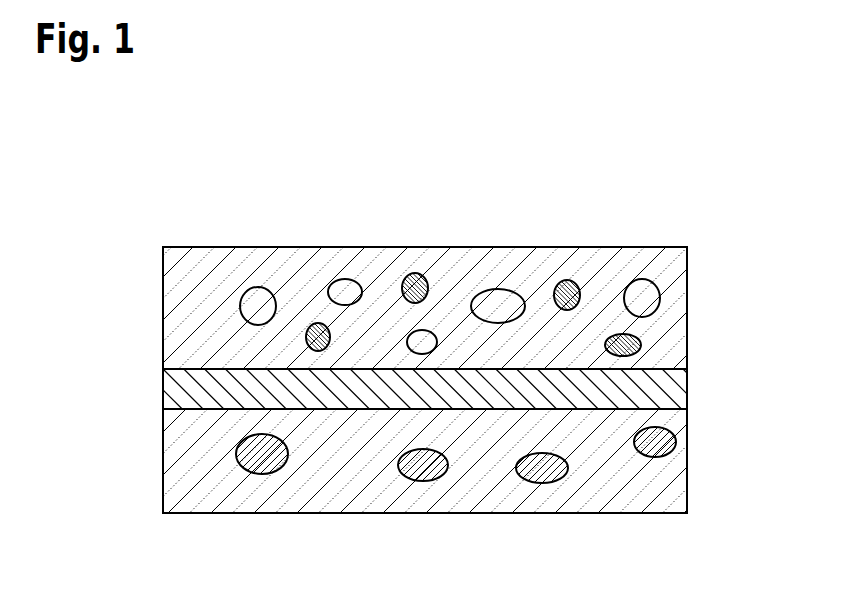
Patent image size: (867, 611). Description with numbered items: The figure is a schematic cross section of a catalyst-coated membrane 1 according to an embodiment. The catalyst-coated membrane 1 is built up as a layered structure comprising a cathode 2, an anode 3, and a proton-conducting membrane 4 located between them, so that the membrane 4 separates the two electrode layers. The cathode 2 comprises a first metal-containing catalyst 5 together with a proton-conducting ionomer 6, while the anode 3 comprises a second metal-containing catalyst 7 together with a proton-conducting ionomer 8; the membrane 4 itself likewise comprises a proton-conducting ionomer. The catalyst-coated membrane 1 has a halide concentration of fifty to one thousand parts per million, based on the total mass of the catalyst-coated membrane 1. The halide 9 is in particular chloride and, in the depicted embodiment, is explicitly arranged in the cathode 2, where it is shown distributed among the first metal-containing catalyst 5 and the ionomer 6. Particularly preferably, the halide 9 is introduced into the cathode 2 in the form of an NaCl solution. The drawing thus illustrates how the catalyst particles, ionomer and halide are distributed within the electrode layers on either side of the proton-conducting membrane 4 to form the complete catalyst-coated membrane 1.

The catalyst-coated membrane 1 is at (713, 194).
The cathode 2 is at (688, 320).
The anode 3 is at (688, 465).
The proton-conducting membrane 4 is at (688, 384).
The first metal-containing catalyst 5 is at (240, 296).
The proton-conducting ionomer 6 is at (202, 333).
The second metal-containing catalyst 7 is at (424, 482).
The proton-conducting ionomer 8 is at (341, 473).
The halide 9 is at (419, 272).